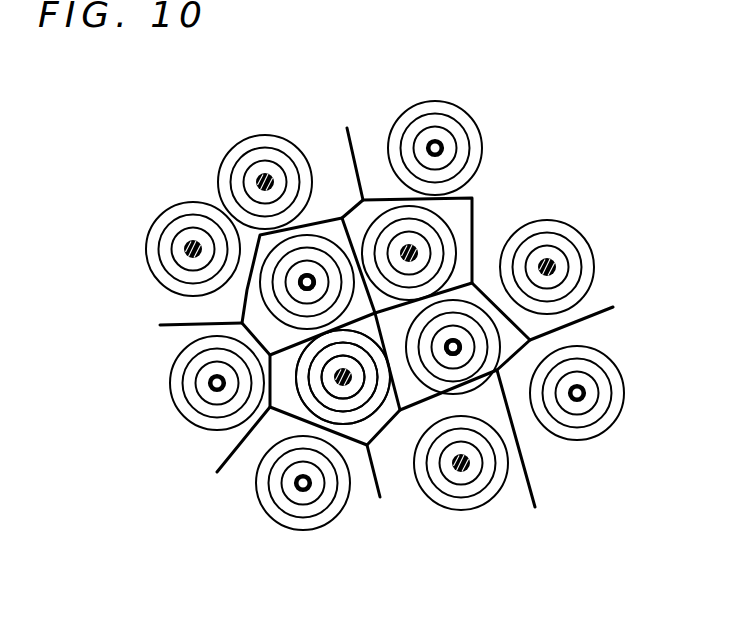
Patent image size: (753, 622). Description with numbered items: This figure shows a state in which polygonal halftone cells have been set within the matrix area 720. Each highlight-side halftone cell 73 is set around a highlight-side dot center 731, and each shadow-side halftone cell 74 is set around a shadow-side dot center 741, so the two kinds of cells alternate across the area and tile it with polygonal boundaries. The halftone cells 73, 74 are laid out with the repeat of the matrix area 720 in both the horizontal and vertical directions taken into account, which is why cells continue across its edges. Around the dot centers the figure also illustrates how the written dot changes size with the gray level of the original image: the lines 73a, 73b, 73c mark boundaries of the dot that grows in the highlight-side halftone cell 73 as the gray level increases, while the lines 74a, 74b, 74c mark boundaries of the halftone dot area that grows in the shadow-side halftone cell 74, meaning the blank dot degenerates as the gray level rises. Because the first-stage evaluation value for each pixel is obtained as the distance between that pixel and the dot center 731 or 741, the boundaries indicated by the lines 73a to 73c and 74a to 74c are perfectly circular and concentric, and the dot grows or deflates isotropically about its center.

The matrix area 720 is at (337, 110).
The highlight-side halftone cell 73 is at (265, 255).
The highlight-side dot center 731 is at (307, 282).
The dot boundary line 73a is at (292, 260).
The dot boundary line 73b is at (302, 248).
The dot boundary line 73c is at (307, 235).
The shadow-side halftone cell 74 is at (465, 214).
The shadow-side dot center 741 is at (409, 253).
The halftone dot area boundary line 74a is at (338, 426).
The halftone dot area boundary line 74b is at (330, 412).
The halftone dot area boundary line 74c is at (322, 398).